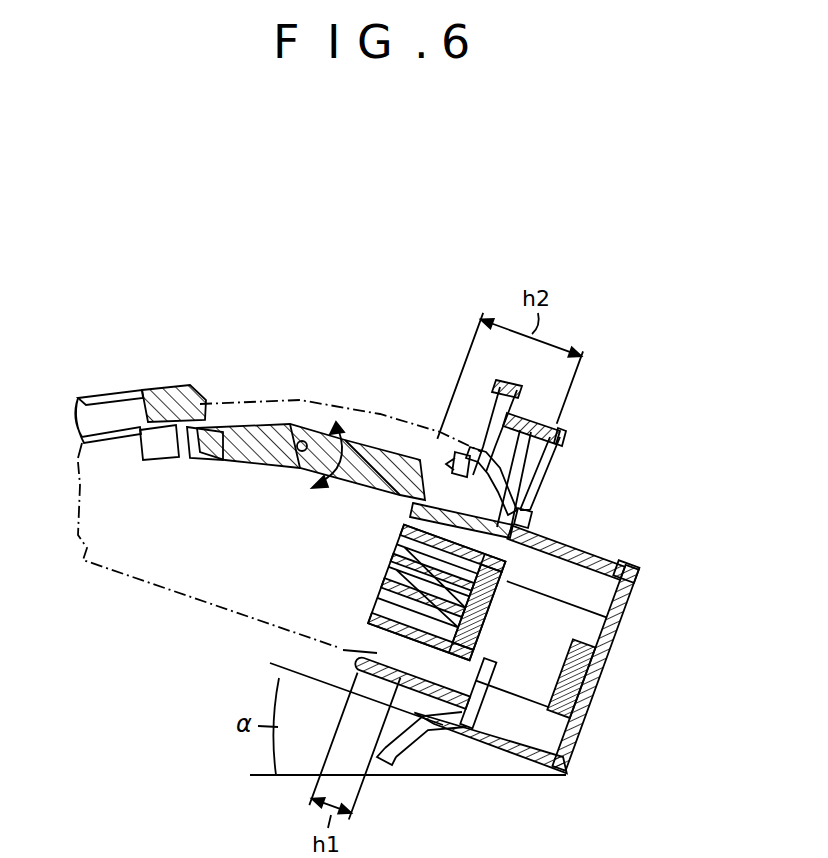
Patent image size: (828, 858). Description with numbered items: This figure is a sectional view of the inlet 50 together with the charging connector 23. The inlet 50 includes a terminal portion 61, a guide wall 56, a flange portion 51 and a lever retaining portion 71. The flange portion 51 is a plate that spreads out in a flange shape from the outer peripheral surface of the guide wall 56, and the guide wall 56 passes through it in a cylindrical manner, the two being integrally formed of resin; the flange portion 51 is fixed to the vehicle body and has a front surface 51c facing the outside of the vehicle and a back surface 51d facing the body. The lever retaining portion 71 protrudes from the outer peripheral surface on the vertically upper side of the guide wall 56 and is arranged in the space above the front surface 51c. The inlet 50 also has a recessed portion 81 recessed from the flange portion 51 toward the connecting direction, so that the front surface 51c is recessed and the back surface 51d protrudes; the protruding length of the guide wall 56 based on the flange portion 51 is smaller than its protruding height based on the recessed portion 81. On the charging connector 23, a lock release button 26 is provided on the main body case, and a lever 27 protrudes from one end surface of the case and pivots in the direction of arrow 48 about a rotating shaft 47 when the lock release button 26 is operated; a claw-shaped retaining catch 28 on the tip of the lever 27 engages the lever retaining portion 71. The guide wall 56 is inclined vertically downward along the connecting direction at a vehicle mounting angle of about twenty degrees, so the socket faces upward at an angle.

The charging connector 23 is at (240, 388).
The lock release button 26 is at (120, 413).
The lever 27 is at (438, 480).
The retaining catch 28 is at (532, 511).
The rotating shaft 47 is at (300, 441).
The arrow 48 is at (362, 447).
The inlet 50 is at (575, 428).
The flange portion 51 is at (518, 400).
The front surface 51c is at (373, 747).
The back surface 51d is at (394, 749).
The guide wall 56 is at (535, 523).
The terminal portion 61 is at (620, 617).
The lever retaining portion 71 is at (463, 450).
The recessed portion 81 is at (510, 450).